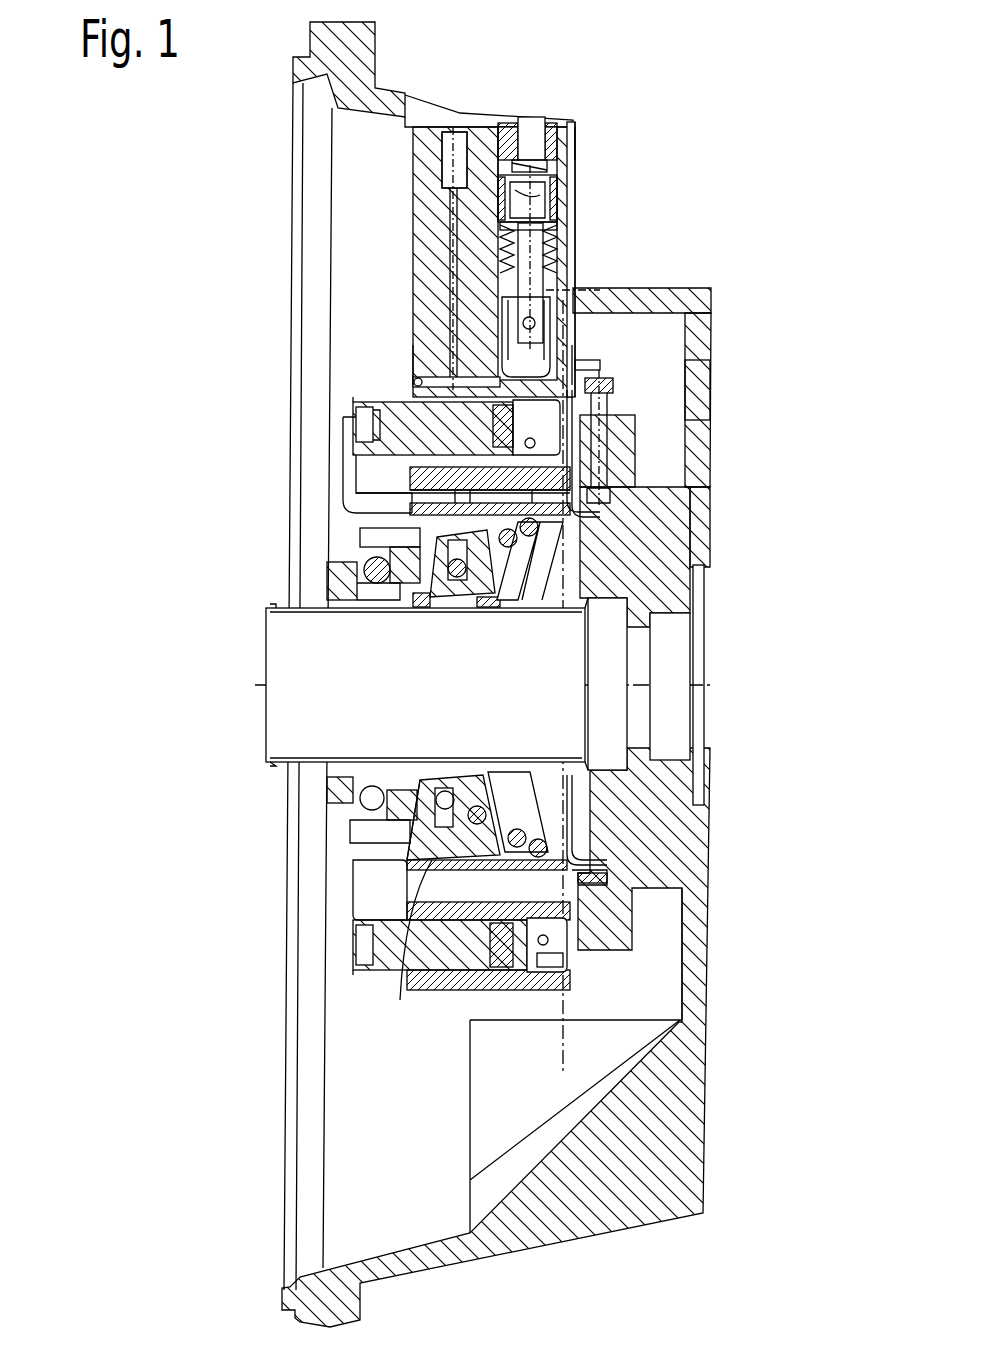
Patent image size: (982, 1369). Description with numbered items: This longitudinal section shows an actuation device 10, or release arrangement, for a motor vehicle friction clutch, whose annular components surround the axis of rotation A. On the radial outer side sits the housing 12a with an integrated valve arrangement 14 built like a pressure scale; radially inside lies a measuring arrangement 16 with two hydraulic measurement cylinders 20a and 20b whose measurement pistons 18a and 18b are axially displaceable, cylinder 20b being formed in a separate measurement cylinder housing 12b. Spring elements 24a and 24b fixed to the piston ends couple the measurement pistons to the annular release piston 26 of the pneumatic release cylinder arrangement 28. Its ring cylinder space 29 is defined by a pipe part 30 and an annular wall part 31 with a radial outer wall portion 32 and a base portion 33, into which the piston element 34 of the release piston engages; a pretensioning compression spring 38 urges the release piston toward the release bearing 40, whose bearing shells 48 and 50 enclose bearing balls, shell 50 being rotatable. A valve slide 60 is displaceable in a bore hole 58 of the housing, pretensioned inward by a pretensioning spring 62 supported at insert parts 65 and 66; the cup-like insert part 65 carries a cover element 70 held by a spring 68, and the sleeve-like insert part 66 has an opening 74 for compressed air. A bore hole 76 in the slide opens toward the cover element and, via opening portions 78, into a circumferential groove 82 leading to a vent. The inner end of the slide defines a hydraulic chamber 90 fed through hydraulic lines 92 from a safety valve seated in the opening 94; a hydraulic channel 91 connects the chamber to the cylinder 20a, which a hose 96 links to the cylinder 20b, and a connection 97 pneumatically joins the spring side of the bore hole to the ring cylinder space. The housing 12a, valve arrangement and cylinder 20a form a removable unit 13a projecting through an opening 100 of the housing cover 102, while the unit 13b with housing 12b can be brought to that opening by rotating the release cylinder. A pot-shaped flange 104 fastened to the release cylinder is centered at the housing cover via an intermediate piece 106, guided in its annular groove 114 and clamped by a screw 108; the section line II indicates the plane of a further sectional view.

The actuation device 10 is at (655, 125).
The housing 12a is at (575, 290).
The measurement cylinder housing 12b is at (470, 995).
The measuring and control/regulating unit 13a is at (590, 148).
The actuation unit 13b is at (545, 968).
The valve arrangement 14 is at (570, 213).
The measuring arrangement 16 is at (350, 403).
The measurement piston 18a is at (356, 490).
The measurement piston 18b is at (375, 970).
The hydraulic measurement cylinder 20a is at (545, 425).
The hydraulic measurement cylinder 20b is at (548, 950).
The spring element 24a is at (355, 430).
The spring element 24b is at (355, 965).
The release piston 26 is at (358, 522).
The release cylinder arrangement 28 is at (578, 545).
The ring cylinder space 29 is at (585, 795).
The pipe part 30 is at (482, 610).
The annular wall part 31 is at (552, 608).
The radial outer wall portion 32 is at (400, 1000).
The base portion 33 is at (552, 790).
The piston element 34 is at (440, 605).
The pretensioning compression spring 38 is at (700, 820).
The release bearing 40 is at (345, 800).
The bearing shell 48 is at (400, 790).
The bearing shell 50 is at (365, 578).
The bore hole 58 is at (560, 250).
The valve slide 60 is at (520, 290).
The pretensioning spring 62 is at (512, 275).
The cup-like insert part 65 is at (498, 200).
The sleeve-like insert part 66 is at (498, 125).
The spring 68 is at (555, 181).
The cover element 70 is at (518, 240).
The opening 74 is at (540, 120).
The bore hole 76 is at (583, 225).
The opening portions 78 is at (540, 325).
The circumferential groove 82 is at (502, 330).
The hydraulic chamber 90 is at (575, 365).
The hydraulic channel 91 is at (615, 387).
The hydraulic lines 92 is at (430, 380).
The bore hole 94 is at (455, 153).
The hose 96 is at (560, 945).
The connection 97 is at (625, 470).
The opening 100 is at (605, 305).
The housing cover 102 is at (293, 83).
The pot-shaped flange 104 is at (580, 940).
The intermediate piece 106 is at (700, 530).
The screw 108 is at (700, 385).
The annular groove 114 is at (598, 875).
The axis of rotation A is at (675, 690).
The section line II is at (557, 355).